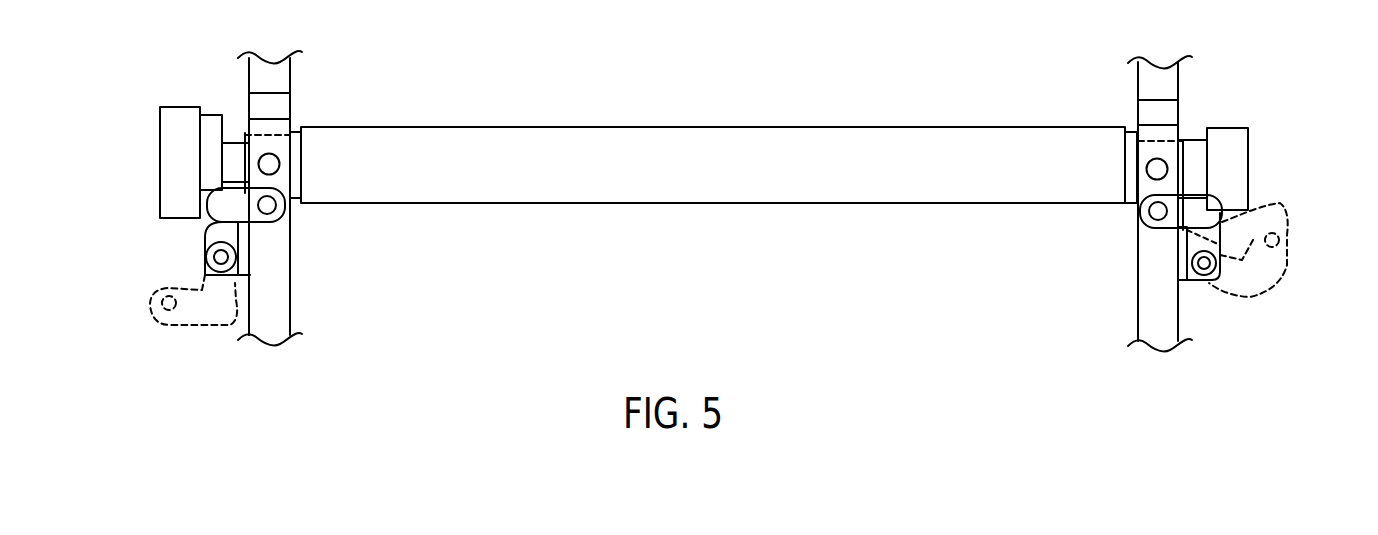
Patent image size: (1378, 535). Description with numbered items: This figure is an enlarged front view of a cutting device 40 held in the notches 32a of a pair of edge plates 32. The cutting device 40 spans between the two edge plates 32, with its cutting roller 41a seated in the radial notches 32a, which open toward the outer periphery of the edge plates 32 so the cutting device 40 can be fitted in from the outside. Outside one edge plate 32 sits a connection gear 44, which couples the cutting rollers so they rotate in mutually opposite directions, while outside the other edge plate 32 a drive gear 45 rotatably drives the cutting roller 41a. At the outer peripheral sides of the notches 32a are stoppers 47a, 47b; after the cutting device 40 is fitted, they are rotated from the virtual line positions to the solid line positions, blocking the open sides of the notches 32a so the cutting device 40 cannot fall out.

The edge plate 32 is at (291, 266).
The notch 32a is at (294, 102).
The cutting device 40 is at (733, 111).
The cutting roller 41a is at (677, 172).
The connection gear 44 is at (1223, 127).
The drive gear 45 is at (181, 106).
The stopper 47a is at (1223, 222).
The stopper 47b is at (205, 226).